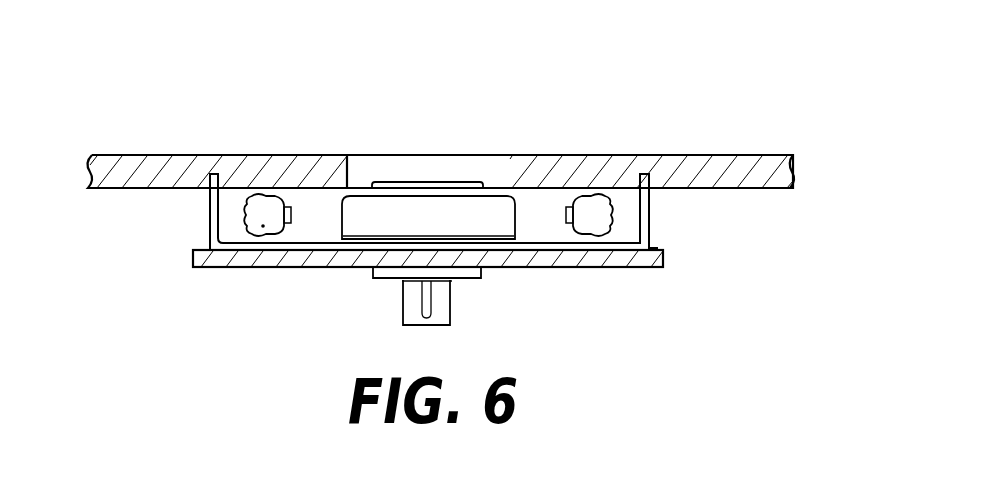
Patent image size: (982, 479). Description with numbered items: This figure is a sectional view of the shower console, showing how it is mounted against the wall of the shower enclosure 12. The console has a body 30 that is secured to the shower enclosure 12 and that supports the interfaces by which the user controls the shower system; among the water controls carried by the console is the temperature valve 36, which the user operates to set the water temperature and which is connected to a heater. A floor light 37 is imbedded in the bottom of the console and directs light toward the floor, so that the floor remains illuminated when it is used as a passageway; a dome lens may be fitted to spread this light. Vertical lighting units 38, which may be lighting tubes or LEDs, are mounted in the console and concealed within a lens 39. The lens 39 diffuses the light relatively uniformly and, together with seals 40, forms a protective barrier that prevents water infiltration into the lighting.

The shower enclosure 12 is at (580, 155).
The body 30 is at (562, 267).
The temperature valve 36 is at (402, 303).
The floor light 37 is at (486, 155).
The vertical lighting units 38 is at (265, 196).
The lens 39 is at (210, 216).
The seals 40 is at (650, 190).